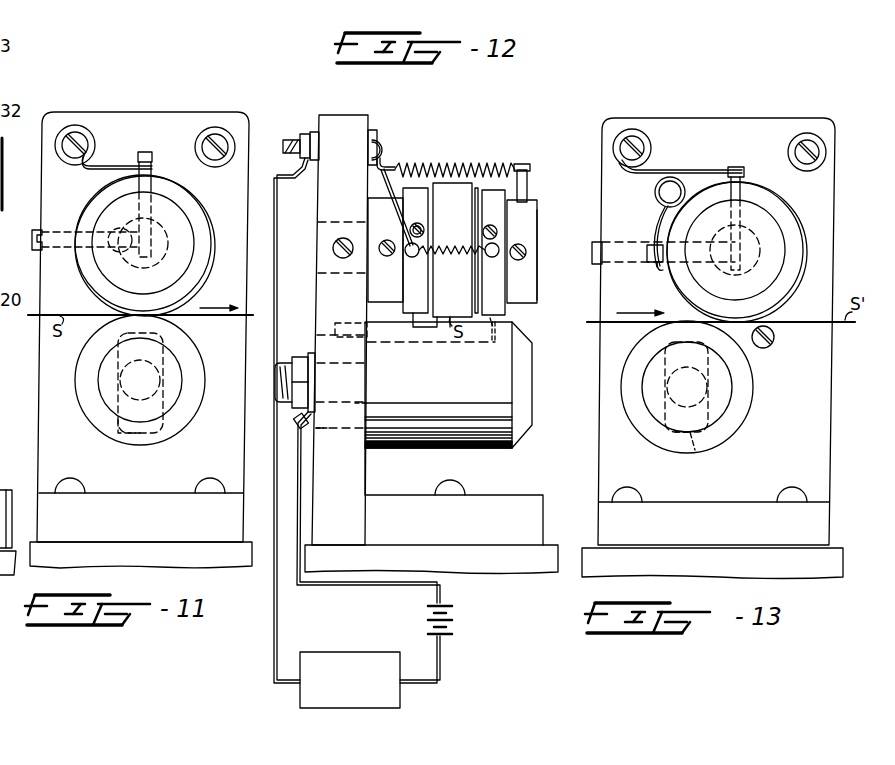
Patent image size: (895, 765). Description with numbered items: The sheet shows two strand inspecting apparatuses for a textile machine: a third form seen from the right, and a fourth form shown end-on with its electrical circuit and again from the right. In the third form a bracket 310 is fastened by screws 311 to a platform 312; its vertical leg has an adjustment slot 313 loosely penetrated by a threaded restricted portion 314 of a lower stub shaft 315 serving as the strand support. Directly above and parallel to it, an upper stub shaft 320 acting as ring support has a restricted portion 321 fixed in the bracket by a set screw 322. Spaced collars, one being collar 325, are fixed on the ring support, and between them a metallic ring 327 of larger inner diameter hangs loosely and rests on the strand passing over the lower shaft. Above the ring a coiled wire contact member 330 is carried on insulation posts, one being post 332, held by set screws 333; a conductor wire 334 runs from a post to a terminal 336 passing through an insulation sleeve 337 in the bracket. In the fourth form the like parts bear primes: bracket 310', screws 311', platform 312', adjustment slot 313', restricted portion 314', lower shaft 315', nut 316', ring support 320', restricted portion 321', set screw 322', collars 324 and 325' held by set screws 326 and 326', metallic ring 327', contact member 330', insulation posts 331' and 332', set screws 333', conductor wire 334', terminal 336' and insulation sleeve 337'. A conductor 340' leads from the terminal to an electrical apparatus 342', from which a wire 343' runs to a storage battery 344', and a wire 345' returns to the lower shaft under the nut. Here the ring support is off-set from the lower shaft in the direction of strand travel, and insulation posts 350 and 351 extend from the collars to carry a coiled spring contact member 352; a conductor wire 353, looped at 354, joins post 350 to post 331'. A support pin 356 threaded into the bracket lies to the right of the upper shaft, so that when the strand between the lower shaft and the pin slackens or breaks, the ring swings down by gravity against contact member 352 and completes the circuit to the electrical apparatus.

In FIG. 11, the bracket 310 is at (126, 327).
In FIG. 11, the screws 311 is at (143, 479).
In FIG. 11, the platform 312 is at (141, 565).
In FIG. 11, the adjustment slot 313 is at (136, 435).
In FIG. 11, the restricted portion 314 is at (140, 383).
In FIG. 11, the lower stub shaft 315 is at (147, 382).
In FIG. 11, the upper stub shaft 320 is at (144, 239).
In FIG. 11, the restricted portion 321 is at (143, 255).
In FIG. 11, the set screw 322 is at (72, 229).
In FIG. 11, the collar 325 is at (162, 246).
In FIG. 11, the metallic ring 327 is at (140, 303).
In FIG. 11, the coiled wire contact member 330 is at (166, 200).
In FIG. 11, the insulation post 332 is at (156, 146).
In FIG. 11, the set screws 333 is at (120, 229).
In FIG. 13, the set screws 333 is at (732, 257).
In FIG. 11, the conductor wire 334 is at (117, 155).
In FIG. 11, the terminal 336 is at (148, 139).
In FIG. 11, the insulation sleeve 337 is at (70, 124).
In FIG. 12, the bracket 310' is at (454, 496).
In FIG. 13, the bracket 310' is at (736, 331).
In FIG. 12, the screws 311' is at (471, 482).
In FIG. 13, the screws 311' is at (715, 486).
In FIG. 12, the platform 312' is at (436, 571).
In FIG. 13, the platform 312' is at (712, 573).
In FIG. 12, the adjustment slot 313' is at (333, 442).
In FIG. 13, the adjustment slot 313' is at (706, 449).
In FIG. 12, the restricted portion 314' is at (382, 392).
In FIG. 13, the restricted portion 314' is at (686, 387).
In FIG. 12, the lower shaft 315' is at (470, 385).
In FIG. 13, the lower shaft 315' is at (699, 387).
In FIG. 12, the nut 316' is at (297, 373).
In FIG. 12, the ring support 320' is at (561, 255).
In FIG. 13, the ring support 320' is at (747, 250).
In FIG. 12, the restricted portion 321' is at (340, 330).
In FIG. 12, the set screw 322' is at (320, 247).
In FIG. 13, the set screw 322' is at (657, 238).
In FIG. 12, the collar 324 is at (408, 291).
In FIG. 12, the collar 325' is at (522, 251).
In FIG. 13, the collar 325' is at (753, 252).
In FIG. 12, the set screws 326 is at (499, 220).
In FIG. 12, the set screws 326' is at (443, 223).
In FIG. 12, the metallic ring 327' is at (452, 330).
In FIG. 13, the metallic ring 327' is at (732, 269).
In FIG. 12, the coiled wire contact member 330' is at (455, 159).
In FIG. 13, the coiled wire contact member 330' is at (760, 216).
In FIG. 12, the insulation post 331' is at (403, 153).
In FIG. 12, the insulation post 332' is at (536, 172).
In FIG. 13, the insulation post 332' is at (751, 158).
In FIG. 12, the set screws 333' is at (458, 242).
In FIG. 13, the conductor wire 334' is at (680, 157).
In FIG. 12, the terminal 336' is at (345, 136).
In FIG. 13, the terminal 336' is at (723, 143).
In FIG. 12, the insulation sleeve 337' is at (380, 126).
In FIG. 13, the insulation sleeve 337' is at (642, 128).
In FIG. 12, the conductor 340' is at (296, 420).
In FIG. 12, the electrical apparatus 342' is at (376, 680).
In FIG. 12, the wire 343' is at (447, 659).
In FIG. 12, the storage battery 344' is at (463, 620).
In FIG. 12, the wire 345' is at (366, 510).
In FIG. 12, the insulation post 350 is at (413, 256).
In FIG. 12, the insulation post 351 is at (494, 256).
In FIG. 13, the insulation post 351 is at (646, 247).
In FIG. 12, the coiled spring contact member 352 is at (444, 255).
In FIG. 13, the coiled spring contact member 352 is at (658, 268).
In FIG. 12, the conductor wire 353 is at (400, 218).
In FIG. 13, the conductor wire 353 is at (658, 228).
In FIG. 12, the loop 354 is at (402, 206).
In FIG. 13, the loop 354 is at (660, 190).
In FIG. 12, the support pin 356 is at (436, 344).
In FIG. 13, the support pin 356 is at (764, 348).